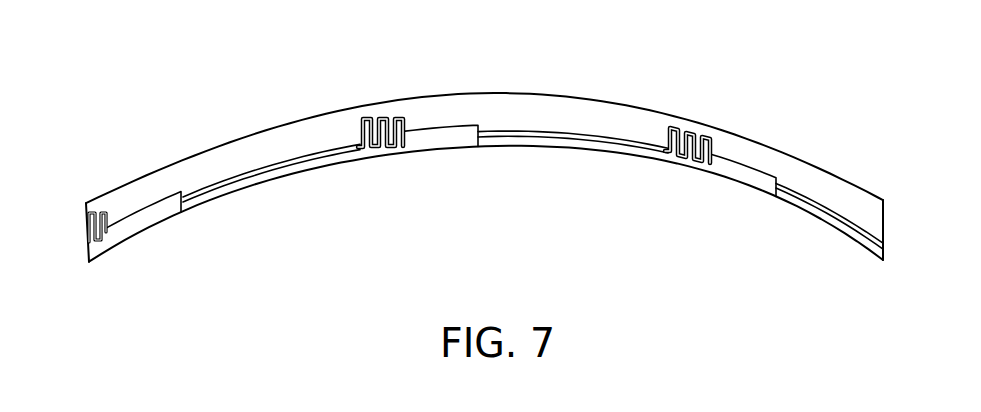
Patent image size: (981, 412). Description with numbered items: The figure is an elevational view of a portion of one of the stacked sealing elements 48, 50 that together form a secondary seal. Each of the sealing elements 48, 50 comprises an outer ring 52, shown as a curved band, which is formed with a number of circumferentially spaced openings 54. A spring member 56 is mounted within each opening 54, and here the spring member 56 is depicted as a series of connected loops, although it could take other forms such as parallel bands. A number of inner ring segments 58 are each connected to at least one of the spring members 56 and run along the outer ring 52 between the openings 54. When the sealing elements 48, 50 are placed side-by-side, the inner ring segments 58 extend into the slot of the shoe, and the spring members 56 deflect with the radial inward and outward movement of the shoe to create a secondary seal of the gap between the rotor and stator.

The sealing element 48 is at (467, 177).
The sealing element 50 is at (467, 177).
The outer ring 52 is at (247, 134).
The openings 54 is at (107, 200).
The spring member 56 is at (370, 116).
The inner ring segments 58 is at (513, 147).